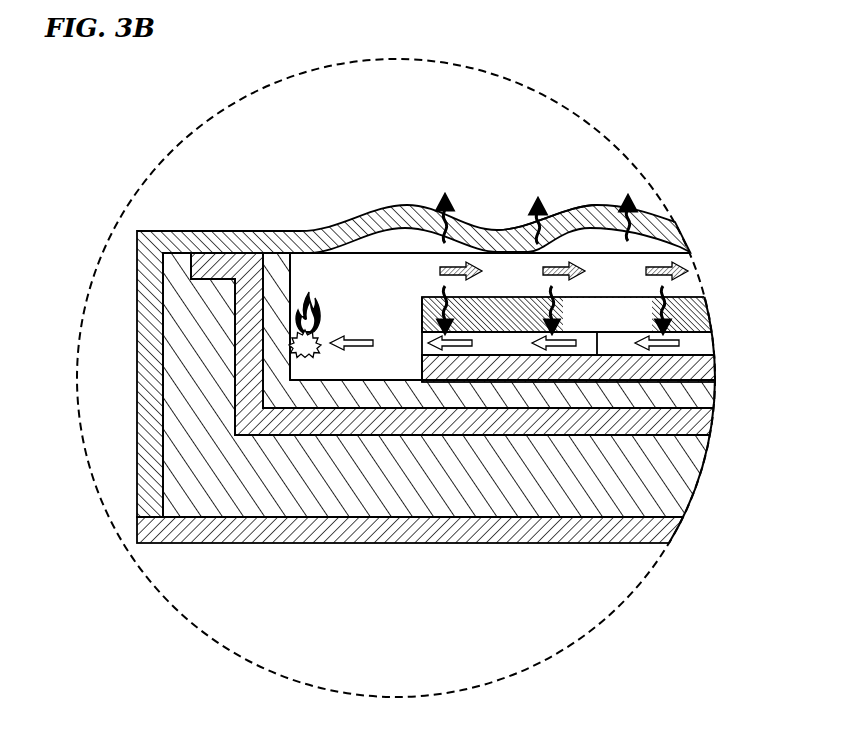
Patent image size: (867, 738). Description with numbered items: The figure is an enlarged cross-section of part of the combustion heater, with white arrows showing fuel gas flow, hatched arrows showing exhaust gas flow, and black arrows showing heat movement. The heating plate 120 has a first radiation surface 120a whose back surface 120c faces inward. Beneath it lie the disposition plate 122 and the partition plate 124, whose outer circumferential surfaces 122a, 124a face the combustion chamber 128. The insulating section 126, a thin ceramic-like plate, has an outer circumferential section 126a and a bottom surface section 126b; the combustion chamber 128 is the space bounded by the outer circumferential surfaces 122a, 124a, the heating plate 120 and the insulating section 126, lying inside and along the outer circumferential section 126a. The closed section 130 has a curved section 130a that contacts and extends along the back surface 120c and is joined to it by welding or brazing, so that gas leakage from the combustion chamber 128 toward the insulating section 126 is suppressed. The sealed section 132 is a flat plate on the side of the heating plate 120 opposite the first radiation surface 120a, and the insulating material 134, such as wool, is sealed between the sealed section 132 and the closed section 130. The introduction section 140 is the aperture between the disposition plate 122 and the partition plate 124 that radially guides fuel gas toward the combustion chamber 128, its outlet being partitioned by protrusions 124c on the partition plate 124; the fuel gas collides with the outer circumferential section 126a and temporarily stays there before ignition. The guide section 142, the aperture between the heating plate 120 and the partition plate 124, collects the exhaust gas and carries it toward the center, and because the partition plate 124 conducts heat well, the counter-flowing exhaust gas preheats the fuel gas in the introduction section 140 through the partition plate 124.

The heating plate 120 is at (690, 243).
The first radiation surface 120a is at (513, 228).
The back surface 120c is at (176, 256).
The disposition plate 122 is at (717, 375).
The outer circumferential surface 122a is at (420, 368).
The partition plate 124 is at (712, 318).
The outer circumferential surface 124a is at (422, 310).
The protrusions 124c is at (422, 342).
The insulating section 126 is at (703, 395).
The outer circumferential section 126a is at (290, 279).
The bottom surface section 126b is at (375, 380).
The combustion chamber 128 is at (372, 328).
The closed section 130 is at (700, 420).
The curved section 130a is at (203, 280).
The sealed section 132 is at (690, 537).
The insulating material 134 is at (680, 472).
The introduction section 140 is at (698, 345).
The guide section 142 is at (692, 282).